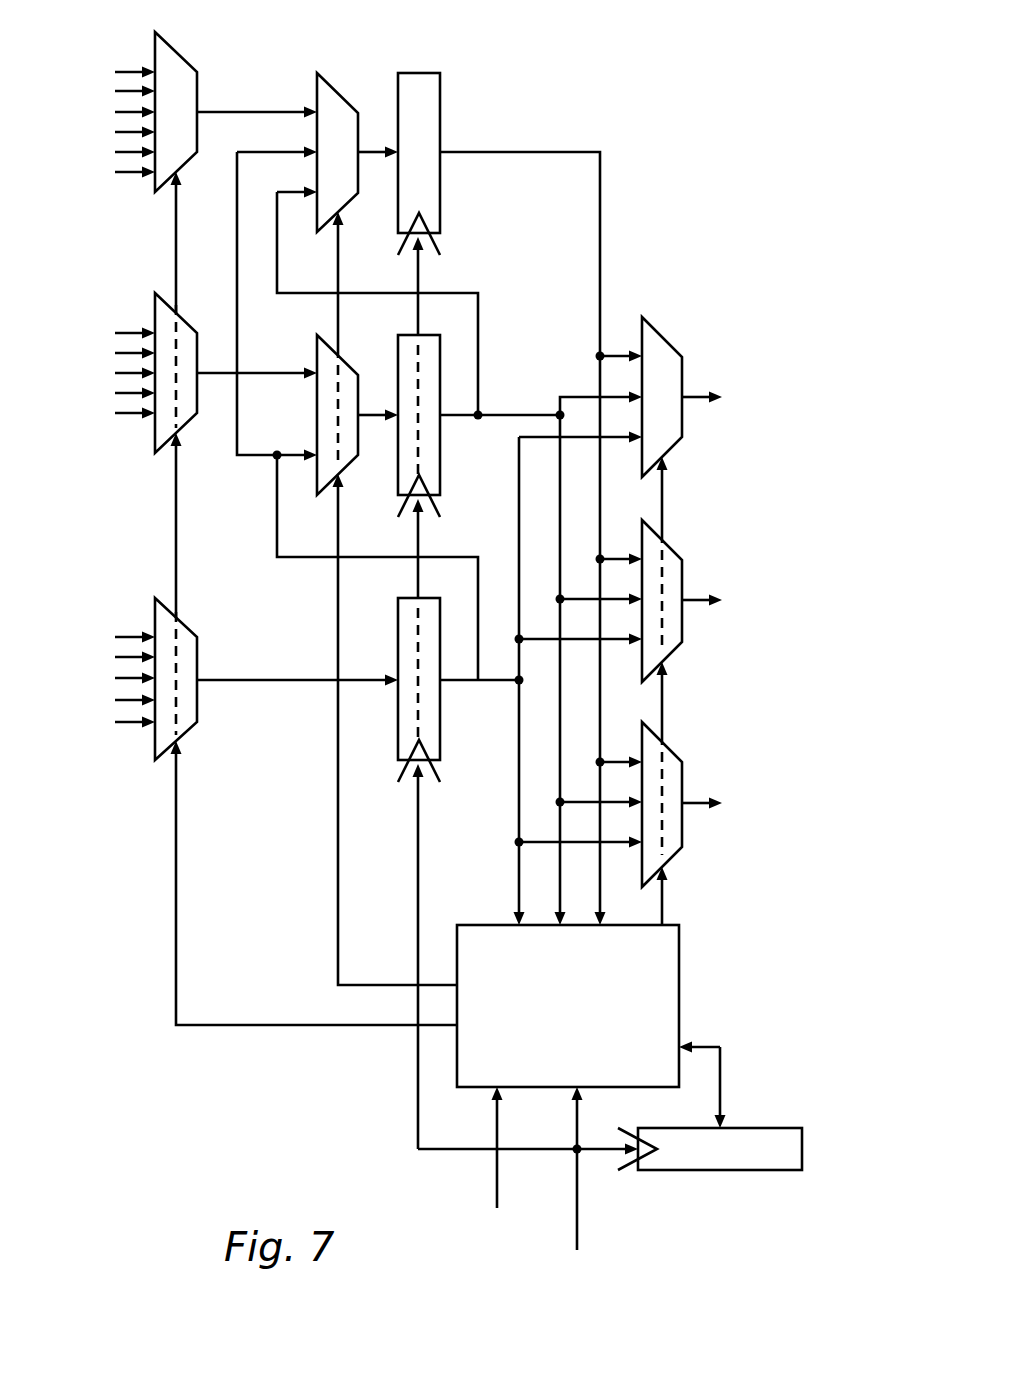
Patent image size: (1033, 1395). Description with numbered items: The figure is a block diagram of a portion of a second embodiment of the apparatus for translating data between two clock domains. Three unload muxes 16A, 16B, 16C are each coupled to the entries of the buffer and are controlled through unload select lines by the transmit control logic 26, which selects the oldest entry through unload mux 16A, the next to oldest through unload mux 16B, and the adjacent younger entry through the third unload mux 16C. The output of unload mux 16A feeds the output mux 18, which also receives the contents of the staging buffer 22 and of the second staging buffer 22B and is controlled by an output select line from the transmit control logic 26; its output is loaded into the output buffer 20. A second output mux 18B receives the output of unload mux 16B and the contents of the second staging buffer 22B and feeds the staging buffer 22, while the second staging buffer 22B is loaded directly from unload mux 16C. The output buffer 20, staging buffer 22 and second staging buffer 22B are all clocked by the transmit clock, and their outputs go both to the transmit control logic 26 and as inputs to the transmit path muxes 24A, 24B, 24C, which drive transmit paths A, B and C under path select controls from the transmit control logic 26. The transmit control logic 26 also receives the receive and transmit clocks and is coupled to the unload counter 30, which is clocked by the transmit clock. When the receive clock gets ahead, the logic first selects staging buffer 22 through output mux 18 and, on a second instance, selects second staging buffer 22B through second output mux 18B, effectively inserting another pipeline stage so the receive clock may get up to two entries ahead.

The unload mux 16A is at (179, 50).
The unload mux 16B is at (150, 437).
The third unload mux 16C is at (151, 739).
The output mux 18 is at (340, 92).
The second output mux 18B is at (317, 353).
The output buffer 20 is at (422, 72).
The staging buffer 22 is at (440, 458).
The second staging buffer 22B is at (440, 720).
The transmit path mux 24A is at (665, 333).
The transmit path mux 24B is at (670, 545).
The transmit path mux 24C is at (668, 750).
The transmit control logic 26 is at (624, 1080).
The unload counter 30 is at (720, 1171).